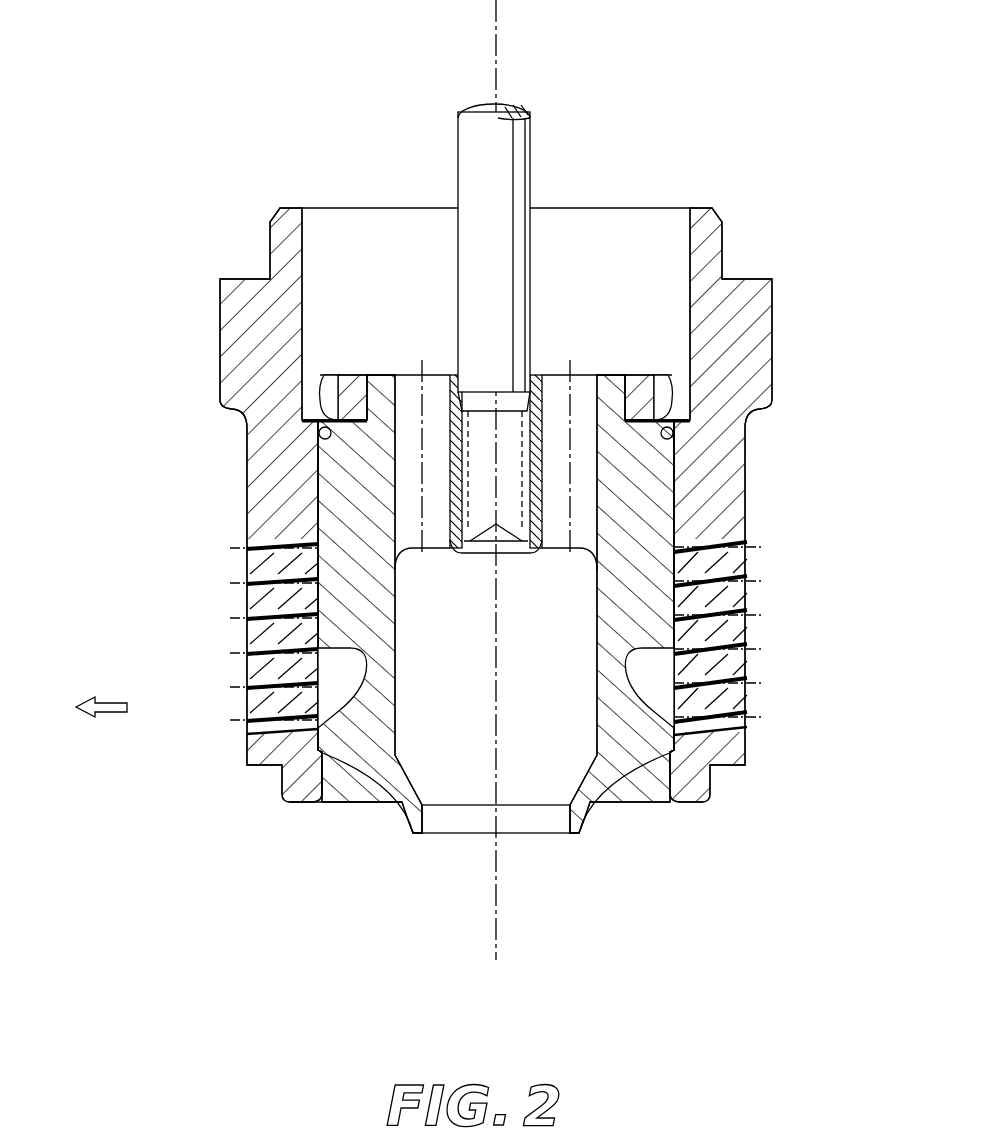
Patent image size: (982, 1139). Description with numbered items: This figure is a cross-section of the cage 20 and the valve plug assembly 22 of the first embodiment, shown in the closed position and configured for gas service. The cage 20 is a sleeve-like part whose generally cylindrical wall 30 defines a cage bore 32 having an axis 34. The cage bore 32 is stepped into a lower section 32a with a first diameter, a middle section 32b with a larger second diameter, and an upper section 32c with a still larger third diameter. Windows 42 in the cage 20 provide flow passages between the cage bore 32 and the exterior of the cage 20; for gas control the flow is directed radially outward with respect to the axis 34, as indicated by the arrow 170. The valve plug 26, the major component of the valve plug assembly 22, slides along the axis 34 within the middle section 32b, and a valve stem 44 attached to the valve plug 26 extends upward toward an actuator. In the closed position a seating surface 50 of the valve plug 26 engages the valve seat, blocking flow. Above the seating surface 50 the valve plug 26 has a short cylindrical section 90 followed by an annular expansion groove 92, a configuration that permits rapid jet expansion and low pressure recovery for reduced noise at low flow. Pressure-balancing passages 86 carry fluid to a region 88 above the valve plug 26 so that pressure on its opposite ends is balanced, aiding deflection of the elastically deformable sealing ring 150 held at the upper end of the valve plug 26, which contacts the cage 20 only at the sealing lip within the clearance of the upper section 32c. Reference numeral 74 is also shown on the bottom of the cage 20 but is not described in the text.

The cage 20 is at (245, 742).
The valve plug assembly 22 is at (404, 822).
The valve plug 26 is at (398, 667).
The cylindrical wall 30 is at (245, 522).
The cage bore 32 is at (635, 785).
The lower section 32a is at (652, 775).
The middle section 32b is at (676, 530).
The upper section 32c is at (688, 248).
The axis 34 is at (493, 733).
The windows 42 is at (245, 650).
The valve stem 44 is at (457, 153).
The seating surface 50 is at (600, 718).
The bottom surface 74 is at (258, 770).
The pressure-balancing passages 86 is at (437, 553).
The region 88 is at (400, 299).
The cylindrical section 90 is at (682, 720).
The expansion groove 92 is at (650, 683).
The sealing ring 150 is at (683, 372).
The arrow 170 is at (120, 712).